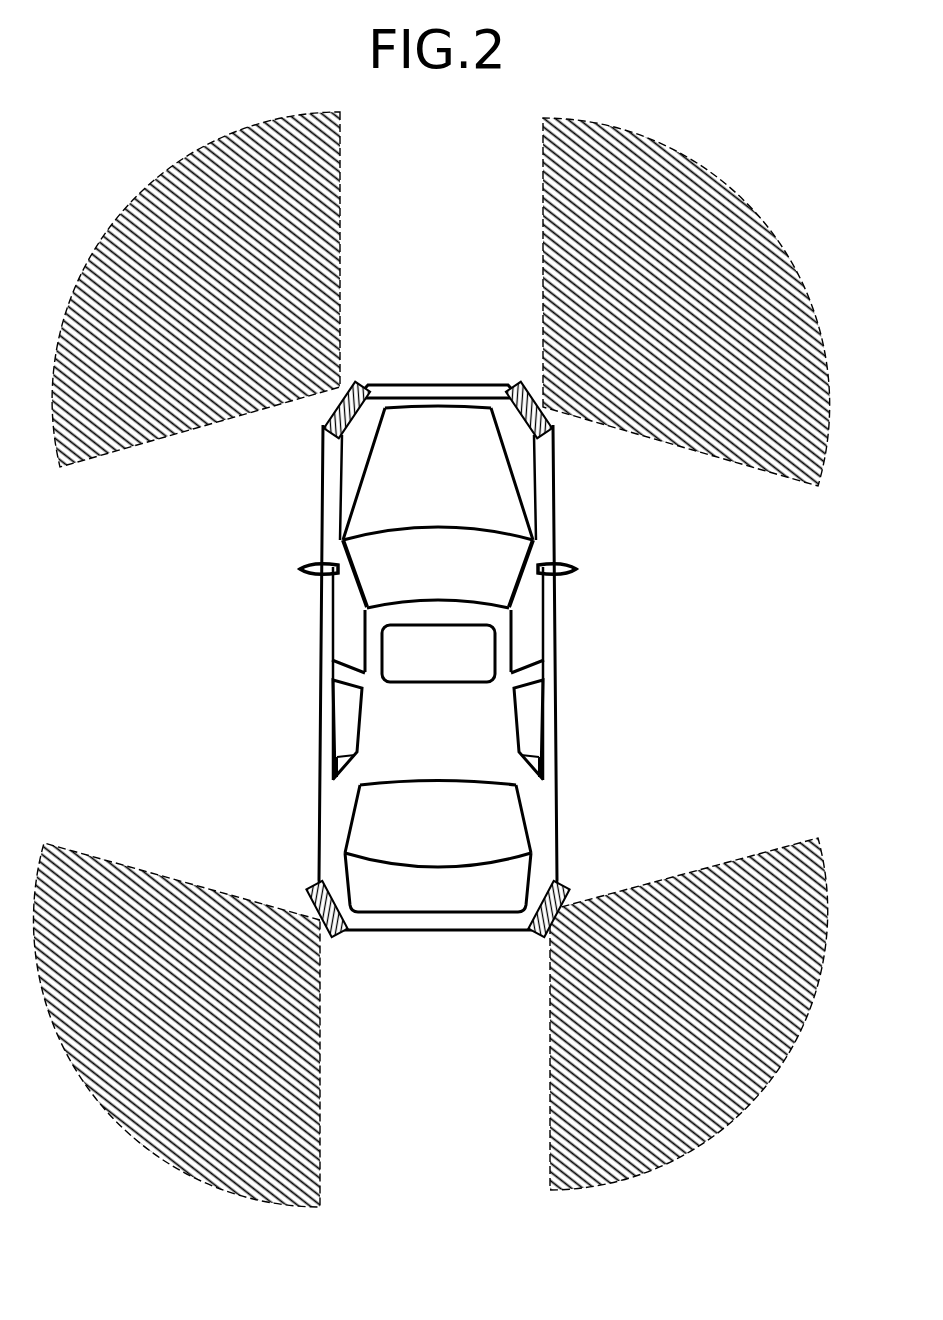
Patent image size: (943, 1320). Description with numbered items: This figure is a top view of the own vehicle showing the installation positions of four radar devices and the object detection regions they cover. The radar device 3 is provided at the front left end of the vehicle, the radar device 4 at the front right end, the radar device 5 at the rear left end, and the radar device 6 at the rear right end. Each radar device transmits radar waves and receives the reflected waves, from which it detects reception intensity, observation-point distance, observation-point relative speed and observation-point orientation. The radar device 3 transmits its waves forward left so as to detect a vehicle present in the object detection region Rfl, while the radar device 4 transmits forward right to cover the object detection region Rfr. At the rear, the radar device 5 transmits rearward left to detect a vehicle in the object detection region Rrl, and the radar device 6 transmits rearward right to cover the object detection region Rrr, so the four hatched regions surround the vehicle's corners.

The radar device 3 is at (363, 383).
The radar device 4 is at (523, 383).
The radar device 5 is at (345, 937).
The radar device 6 is at (529, 937).
The object detection region Rfl is at (347, 166).
The object detection region Rfr is at (712, 172).
The object detection region Rrl is at (153, 872).
The object detection region Rrr is at (700, 870).